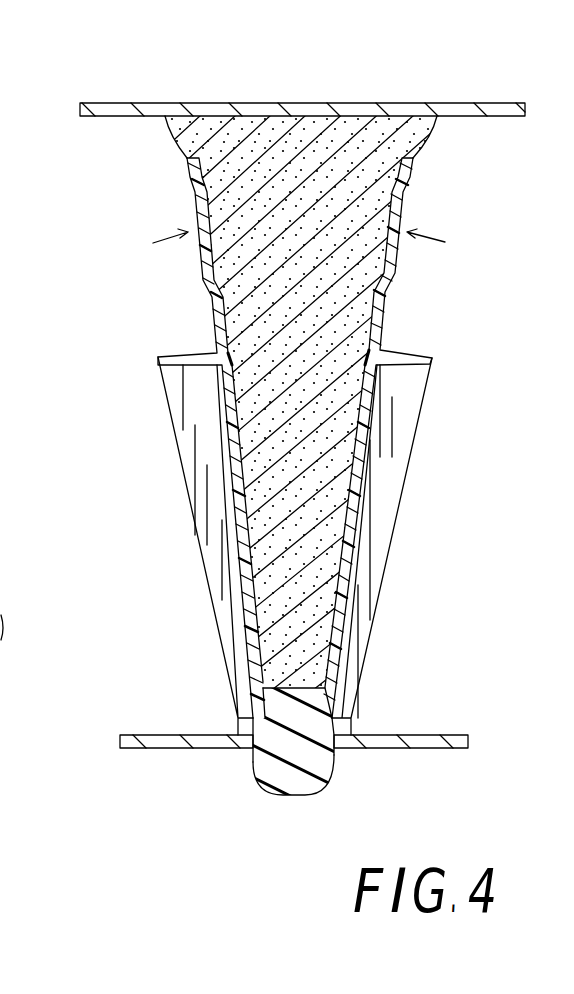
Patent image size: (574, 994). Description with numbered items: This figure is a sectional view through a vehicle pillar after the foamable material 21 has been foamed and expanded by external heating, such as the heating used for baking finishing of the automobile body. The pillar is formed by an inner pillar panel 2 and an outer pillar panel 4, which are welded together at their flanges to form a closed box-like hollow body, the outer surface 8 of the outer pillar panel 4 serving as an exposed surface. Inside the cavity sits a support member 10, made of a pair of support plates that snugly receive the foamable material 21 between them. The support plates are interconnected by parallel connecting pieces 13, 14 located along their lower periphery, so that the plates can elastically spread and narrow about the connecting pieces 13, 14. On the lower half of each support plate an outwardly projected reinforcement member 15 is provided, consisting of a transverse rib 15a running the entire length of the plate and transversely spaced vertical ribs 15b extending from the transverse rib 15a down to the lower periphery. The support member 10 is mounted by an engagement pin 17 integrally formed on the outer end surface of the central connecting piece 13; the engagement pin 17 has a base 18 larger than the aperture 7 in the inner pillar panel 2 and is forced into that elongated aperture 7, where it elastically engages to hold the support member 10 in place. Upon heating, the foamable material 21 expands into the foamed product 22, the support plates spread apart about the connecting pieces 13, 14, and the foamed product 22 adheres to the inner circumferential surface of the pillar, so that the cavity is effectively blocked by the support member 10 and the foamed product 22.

The inner pillar panel 2 is at (433, 742).
The outer pillar panel 4 is at (483, 102).
The aperture 7 is at (328, 772).
The outer surface 8 is at (300, 102).
The support member 10 is at (161, 338).
The connecting piece 13 is at (288, 693).
The connecting piece 14 is at (297, 417).
The reinforcement member 15 is at (562, 287).
The transverse rib 15a is at (182, 360).
The vertical ribs 15b is at (193, 477).
The engagement pin 17 is at (262, 802).
The base 18 is at (350, 718).
The foamable material 21 is at (300, 408).
The foamed product 22 is at (375, 137).